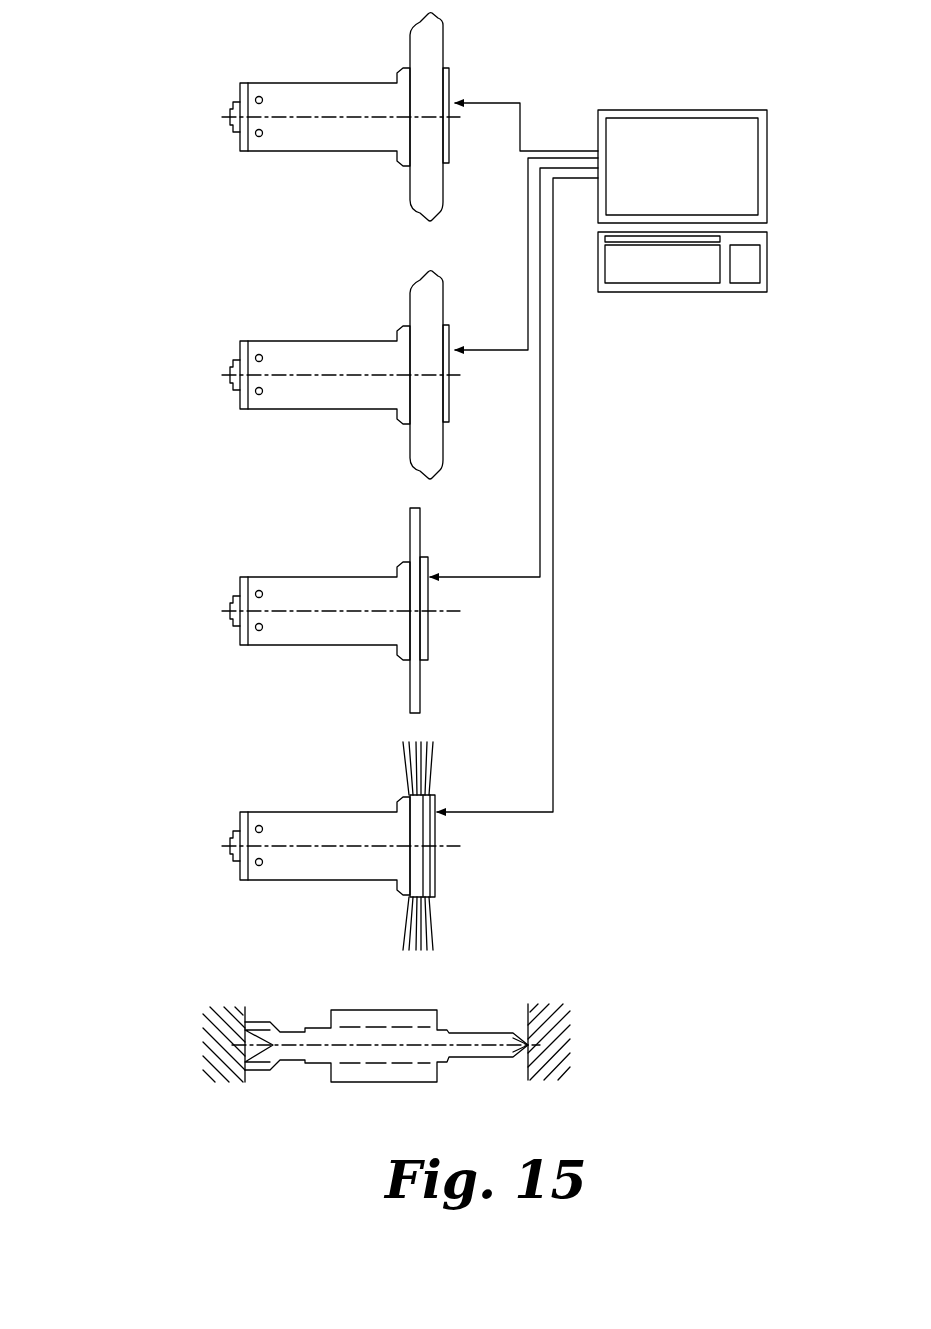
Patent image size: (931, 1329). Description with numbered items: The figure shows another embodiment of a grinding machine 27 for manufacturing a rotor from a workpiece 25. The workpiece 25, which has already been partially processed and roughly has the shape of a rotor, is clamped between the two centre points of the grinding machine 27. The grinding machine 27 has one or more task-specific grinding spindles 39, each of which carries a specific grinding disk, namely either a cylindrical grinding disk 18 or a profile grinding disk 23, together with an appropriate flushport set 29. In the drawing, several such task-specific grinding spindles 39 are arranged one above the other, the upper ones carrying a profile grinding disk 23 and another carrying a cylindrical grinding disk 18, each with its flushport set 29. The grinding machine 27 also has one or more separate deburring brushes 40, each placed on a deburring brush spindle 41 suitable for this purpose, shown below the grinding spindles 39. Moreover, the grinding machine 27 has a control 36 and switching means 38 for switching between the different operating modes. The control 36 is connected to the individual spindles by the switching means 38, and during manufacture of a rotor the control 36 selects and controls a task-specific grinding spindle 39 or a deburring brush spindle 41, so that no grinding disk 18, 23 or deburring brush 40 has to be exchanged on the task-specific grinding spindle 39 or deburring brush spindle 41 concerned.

The grinding disk 18 is at (415, 522).
The profile grinding disk 23 is at (430, 42).
The workpiece 25 is at (371, 1010).
The grinding machine 27 is at (683, 925).
The flushport set 29 is at (450, 195).
The control 36 is at (703, 90).
The switching means 38 is at (607, 525).
The task-specific grinding spindle 39 is at (212, 116).
The deburring brush 40 is at (425, 752).
The deburring brush spindle 41 is at (212, 846).